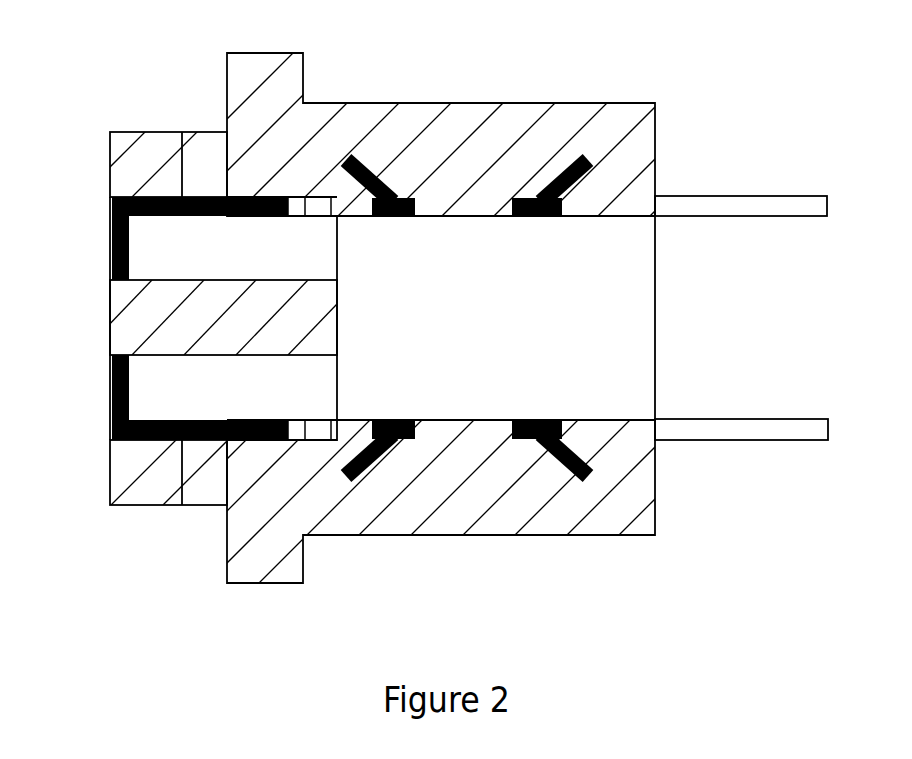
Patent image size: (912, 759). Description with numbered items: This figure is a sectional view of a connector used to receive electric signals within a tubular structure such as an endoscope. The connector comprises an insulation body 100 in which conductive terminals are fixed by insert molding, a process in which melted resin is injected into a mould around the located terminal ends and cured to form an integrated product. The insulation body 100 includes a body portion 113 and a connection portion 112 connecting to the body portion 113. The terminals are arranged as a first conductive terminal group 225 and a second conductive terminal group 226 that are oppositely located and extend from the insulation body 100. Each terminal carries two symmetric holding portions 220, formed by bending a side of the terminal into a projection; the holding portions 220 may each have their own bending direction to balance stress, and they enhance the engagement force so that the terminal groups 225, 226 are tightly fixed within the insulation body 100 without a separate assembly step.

The insulation body 100 is at (267, 508).
The connection portion 112 is at (453, 120).
The body portion 113 is at (162, 148).
The holding portions 220 is at (600, 158).
The first conductive terminal group 225 is at (687, 195).
The second conductive terminal group 226 is at (732, 428).